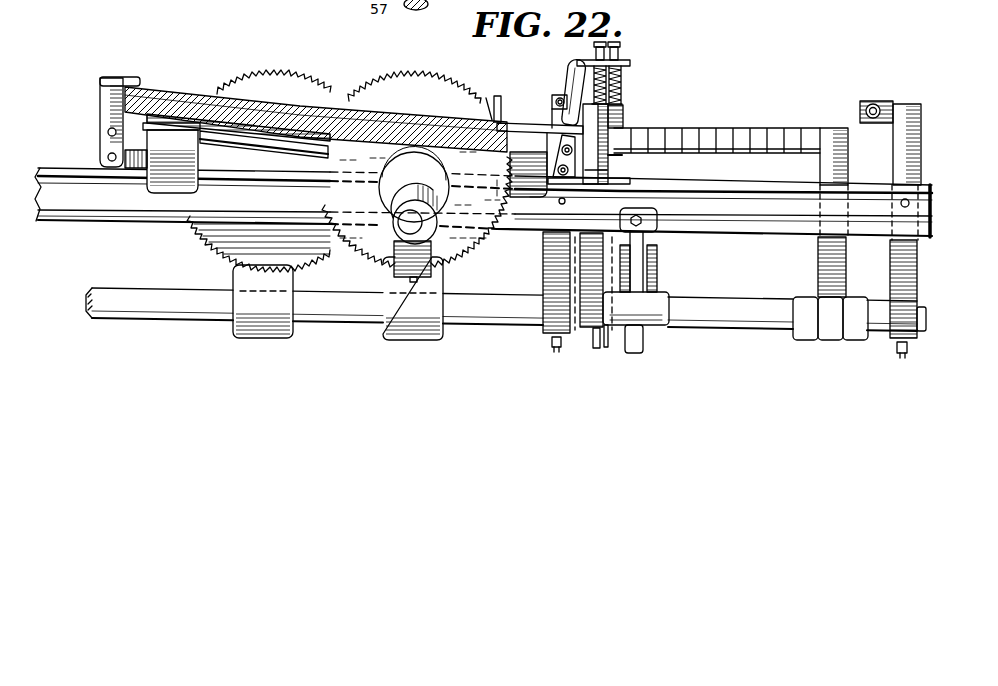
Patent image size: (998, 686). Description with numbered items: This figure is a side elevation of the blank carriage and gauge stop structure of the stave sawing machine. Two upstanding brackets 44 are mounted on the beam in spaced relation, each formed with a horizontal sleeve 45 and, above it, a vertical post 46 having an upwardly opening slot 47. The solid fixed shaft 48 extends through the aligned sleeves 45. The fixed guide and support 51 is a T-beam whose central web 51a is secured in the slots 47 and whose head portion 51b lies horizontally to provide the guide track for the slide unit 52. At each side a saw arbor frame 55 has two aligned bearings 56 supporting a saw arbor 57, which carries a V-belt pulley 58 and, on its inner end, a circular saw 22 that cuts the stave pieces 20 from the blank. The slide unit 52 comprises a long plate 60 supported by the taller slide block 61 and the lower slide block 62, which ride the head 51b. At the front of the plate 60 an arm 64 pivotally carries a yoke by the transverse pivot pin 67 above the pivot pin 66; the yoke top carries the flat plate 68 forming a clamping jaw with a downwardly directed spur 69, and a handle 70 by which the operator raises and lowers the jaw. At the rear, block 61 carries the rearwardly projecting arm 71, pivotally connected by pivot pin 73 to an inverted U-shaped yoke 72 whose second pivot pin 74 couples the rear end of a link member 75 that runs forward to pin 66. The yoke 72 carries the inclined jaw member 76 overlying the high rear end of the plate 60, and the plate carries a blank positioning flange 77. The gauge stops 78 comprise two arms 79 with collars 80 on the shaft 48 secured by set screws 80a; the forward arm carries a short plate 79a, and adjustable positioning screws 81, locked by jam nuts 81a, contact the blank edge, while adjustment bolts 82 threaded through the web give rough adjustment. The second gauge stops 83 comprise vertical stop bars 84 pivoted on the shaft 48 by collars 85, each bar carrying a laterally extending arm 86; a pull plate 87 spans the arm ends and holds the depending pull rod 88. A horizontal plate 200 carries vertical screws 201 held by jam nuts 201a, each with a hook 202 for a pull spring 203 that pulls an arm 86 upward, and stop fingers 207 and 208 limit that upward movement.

The stave piece 20 is at (275, 90).
The circular saw 22 is at (380, 85).
The upstanding bracket 44 is at (645, 345).
The horizontally disposed sleeve 45 is at (670, 300).
The vertically disposed post 46 is at (658, 270).
The upwardly opening slot 47 is at (657, 222).
The solid fixed shaft 48 is at (730, 330).
The fixed guide and support 51 is at (932, 221).
The central web 51a is at (770, 235).
The top or head portion 51b is at (760, 196).
The slide unit 52 is at (245, 128).
The saw arbor frame 55 is at (296, 282).
The bearing 56 is at (396, 224).
The saw arbor 57 is at (440, 226).
The V-belt pulley 58 is at (387, 200).
The long plate 60 is at (203, 122).
The slide block 61 is at (172, 175).
The slide block 62 is at (537, 200).
The upwardly and rearwardly directed arm 64 is at (560, 140).
The pivot pin 66 is at (603, 173).
The transverse pivot pin 67 is at (616, 161).
The flat plate 68 is at (488, 104).
The downwardly directed spur 69 is at (497, 96).
The handle 70 is at (568, 68).
The rearwardly projecting arm 71 is at (133, 168).
The inverted U-shaped yoke 72 is at (103, 93).
The pivot pin 73 is at (107, 157).
The second pivot pin 74 is at (108, 131).
The link member 75 is at (278, 148).
The jaw member 76 is at (133, 79).
The blank positioning flange 77 is at (520, 124).
The gauge stop 78 is at (930, 125).
The arm 79 is at (545, 268).
The short rearwardly directed plate 79a is at (890, 100).
The collar 80 is at (552, 343).
The set screw 80a is at (558, 352).
The adjustable positioning screw 81 is at (875, 106).
The jam nut 81a is at (549, 96).
The adjustment bolt 82 is at (910, 203).
The gauge stop 83 is at (624, 127).
The vertical stop bar 84 is at (598, 232).
The collar 85 is at (596, 346).
The laterally extending arm 86 is at (735, 128).
The pull plate 87 is at (610, 112).
The pull rod 88 is at (607, 350).
The horizontal plate 200 is at (606, 63).
The vertical screw 201 is at (602, 44).
The jam nut 201a is at (616, 46).
The hook 202 is at (622, 66).
The pull spring 203 is at (615, 72).
The stop finger 207 is at (624, 92).
The stop finger 208 is at (624, 82).